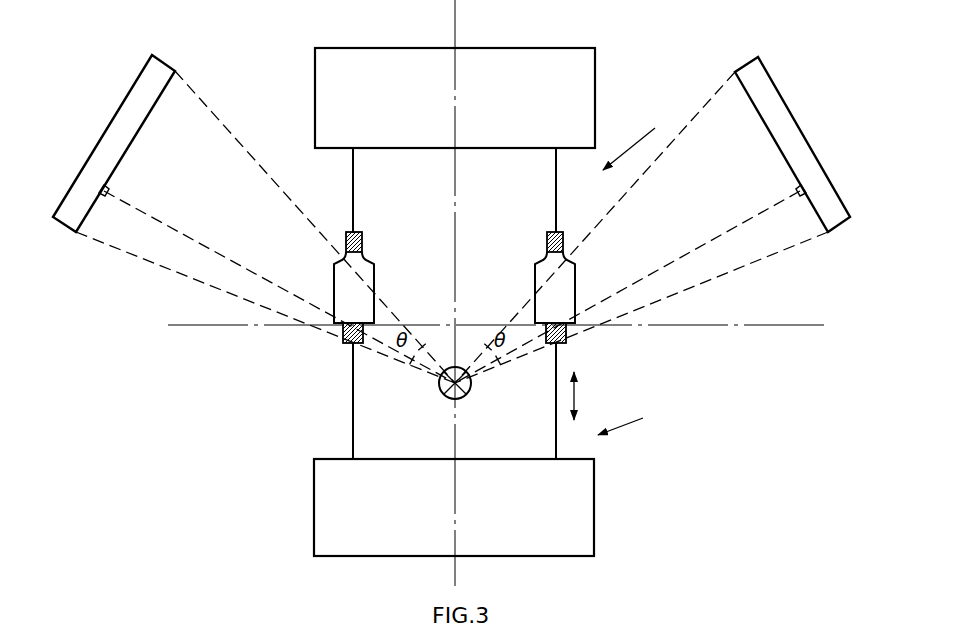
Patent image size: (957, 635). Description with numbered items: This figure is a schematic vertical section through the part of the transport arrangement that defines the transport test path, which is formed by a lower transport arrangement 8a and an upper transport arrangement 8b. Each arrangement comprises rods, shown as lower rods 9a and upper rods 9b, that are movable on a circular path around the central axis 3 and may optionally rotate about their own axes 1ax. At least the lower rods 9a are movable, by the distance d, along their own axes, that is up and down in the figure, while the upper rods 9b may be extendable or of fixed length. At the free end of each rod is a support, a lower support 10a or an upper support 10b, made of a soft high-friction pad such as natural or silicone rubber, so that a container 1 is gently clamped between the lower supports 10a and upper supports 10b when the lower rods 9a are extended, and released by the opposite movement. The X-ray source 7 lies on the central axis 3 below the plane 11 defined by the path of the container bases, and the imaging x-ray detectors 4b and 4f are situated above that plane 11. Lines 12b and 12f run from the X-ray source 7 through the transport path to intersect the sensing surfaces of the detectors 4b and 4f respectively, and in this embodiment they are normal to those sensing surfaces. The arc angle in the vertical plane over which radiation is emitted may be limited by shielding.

The container 1 is at (369, 273).
The rod axis 1ax is at (566, 277).
The central axis 3 is at (458, 13).
The imaging x-ray detector 4b is at (108, 128).
The imaging x-ray detector 4f is at (807, 135).
The X-ray source 7 is at (448, 397).
The lower transport arrangement 8a is at (635, 421).
The upper transport arrangement 8b is at (637, 138).
The lower rod 9a is at (354, 422).
The upper rod 9b is at (354, 188).
The lower support 10a is at (343, 338).
The upper support 10b is at (363, 243).
The plane 11 is at (767, 326).
The line 12b is at (181, 233).
The line 12f is at (735, 228).
The rod movement d is at (583, 396).